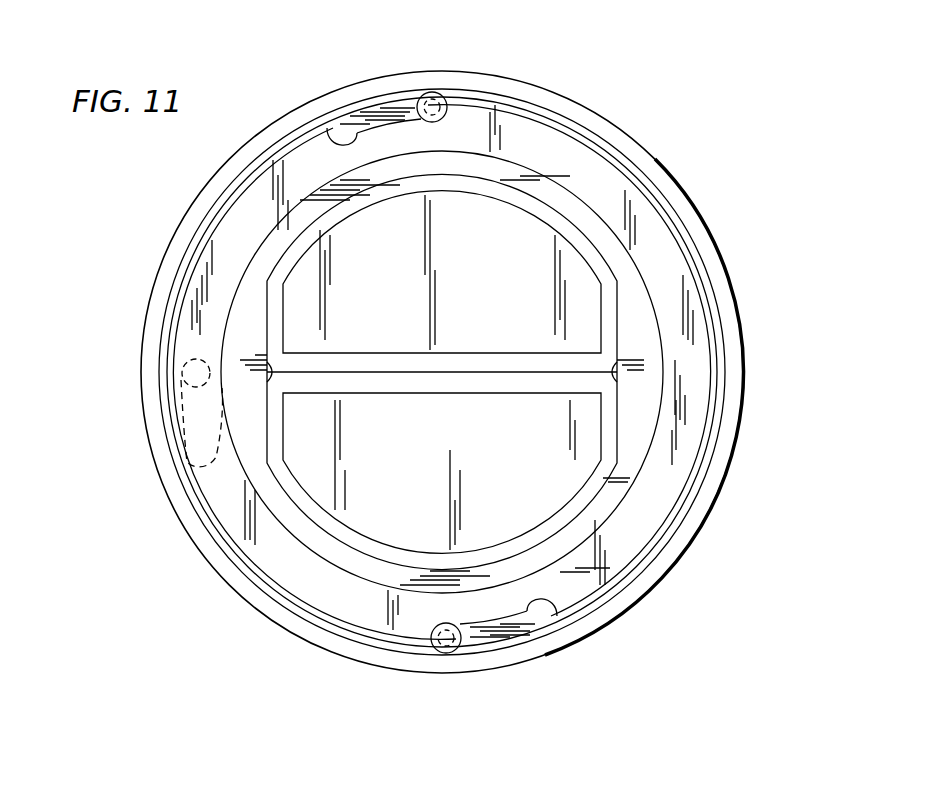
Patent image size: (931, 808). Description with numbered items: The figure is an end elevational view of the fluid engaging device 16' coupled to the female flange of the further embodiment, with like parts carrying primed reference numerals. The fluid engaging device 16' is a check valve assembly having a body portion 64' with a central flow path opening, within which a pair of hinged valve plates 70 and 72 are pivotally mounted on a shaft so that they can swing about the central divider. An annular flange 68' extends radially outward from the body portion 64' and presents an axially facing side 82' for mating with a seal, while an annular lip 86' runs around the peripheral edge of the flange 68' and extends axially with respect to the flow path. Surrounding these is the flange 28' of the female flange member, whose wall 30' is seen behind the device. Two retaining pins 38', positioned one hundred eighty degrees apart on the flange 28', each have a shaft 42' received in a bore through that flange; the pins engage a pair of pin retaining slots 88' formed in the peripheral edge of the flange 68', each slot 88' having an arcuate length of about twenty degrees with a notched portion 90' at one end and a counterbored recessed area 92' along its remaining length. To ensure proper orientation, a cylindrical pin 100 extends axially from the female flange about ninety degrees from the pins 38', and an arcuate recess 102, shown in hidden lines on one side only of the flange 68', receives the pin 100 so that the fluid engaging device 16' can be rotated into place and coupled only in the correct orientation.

The fluid engaging device 16' is at (498, 367).
The flange 28' is at (467, 372).
The inner housing wall 30' is at (463, 372).
The retaining pins 38' is at (470, 380).
The shaft 42' is at (455, 387).
The body portion 64' is at (512, 372).
The annular flange 68' is at (486, 372).
The valve plate 70 is at (442, 272).
The valve plate 72 is at (442, 473).
The side of flange 82' is at (678, 492).
The annular lip 86' is at (489, 372).
The pin retaining slots 88' is at (470, 370).
The notched portion 90' is at (452, 379).
The counterbored recessed area 92' is at (436, 382).
The pin 100 is at (182, 374).
The arcuate recess 102 is at (186, 468).